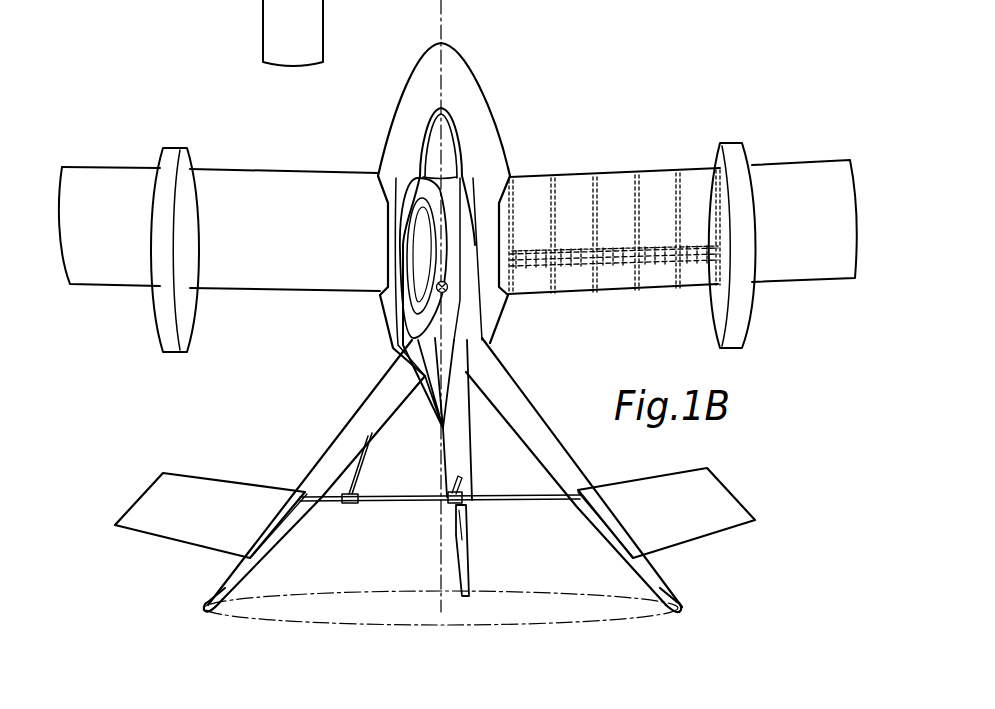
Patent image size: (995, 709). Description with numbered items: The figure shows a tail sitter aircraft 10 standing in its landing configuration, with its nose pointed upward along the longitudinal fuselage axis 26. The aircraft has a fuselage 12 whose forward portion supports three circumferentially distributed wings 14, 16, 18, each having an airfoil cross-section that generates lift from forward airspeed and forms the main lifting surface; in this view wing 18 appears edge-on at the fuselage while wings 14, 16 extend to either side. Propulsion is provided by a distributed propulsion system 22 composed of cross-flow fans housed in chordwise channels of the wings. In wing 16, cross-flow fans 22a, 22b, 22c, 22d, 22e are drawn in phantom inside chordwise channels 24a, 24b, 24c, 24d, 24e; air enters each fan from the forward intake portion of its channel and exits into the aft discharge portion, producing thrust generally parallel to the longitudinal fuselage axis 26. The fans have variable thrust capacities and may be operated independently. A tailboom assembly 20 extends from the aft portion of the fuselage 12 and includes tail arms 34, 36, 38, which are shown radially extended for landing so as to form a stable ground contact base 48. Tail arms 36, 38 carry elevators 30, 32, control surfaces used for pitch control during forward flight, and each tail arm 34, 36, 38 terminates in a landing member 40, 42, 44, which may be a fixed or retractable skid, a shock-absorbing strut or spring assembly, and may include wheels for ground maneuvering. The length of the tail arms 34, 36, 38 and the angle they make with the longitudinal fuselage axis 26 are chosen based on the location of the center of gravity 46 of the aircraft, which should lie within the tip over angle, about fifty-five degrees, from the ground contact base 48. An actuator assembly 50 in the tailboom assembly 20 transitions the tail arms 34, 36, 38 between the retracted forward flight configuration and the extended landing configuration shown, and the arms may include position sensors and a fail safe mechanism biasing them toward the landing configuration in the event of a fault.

The tail sitter aircraft 10 is at (343, 144).
The fuselage 12 is at (418, 90).
The wing 14 is at (229, 176).
The wing 16 is at (812, 168).
The wing 18 is at (410, 250).
The tailboom assembly 20 is at (522, 388).
The distributed propulsion system 22 is at (611, 244).
The cross-flow fan 22a is at (533, 270).
The cross-flow fan 22b is at (575, 269).
The cross-flow fan 22c is at (616, 268).
The cross-flow fan 22d is at (657, 267).
The cross-flow fan 22e is at (697, 266).
The chordwise channel 24a is at (532, 183).
The chordwise channel 24b is at (573, 181).
The chordwise channel 24c is at (615, 178).
The chordwise channel 24d is at (657, 176).
The chordwise channel 24e is at (698, 173).
The longitudinal fuselage axis 26 is at (445, 28).
The elevator 30 is at (723, 496).
The elevator 32 is at (148, 497).
The tail arm 34 is at (460, 462).
The tail arm 36 is at (532, 422).
The tail arm 38 is at (345, 432).
The landing member 40 is at (468, 563).
The landing member 42 is at (660, 587).
The landing member 44 is at (237, 585).
The center of gravity 46 is at (436, 291).
The ground contact base 48 is at (381, 590).
The actuator assembly 50 is at (367, 489).